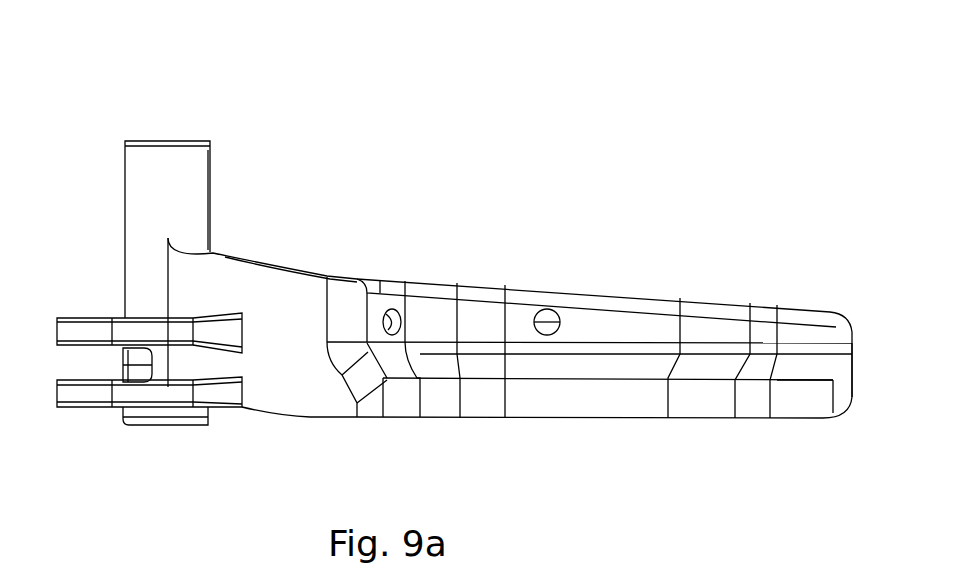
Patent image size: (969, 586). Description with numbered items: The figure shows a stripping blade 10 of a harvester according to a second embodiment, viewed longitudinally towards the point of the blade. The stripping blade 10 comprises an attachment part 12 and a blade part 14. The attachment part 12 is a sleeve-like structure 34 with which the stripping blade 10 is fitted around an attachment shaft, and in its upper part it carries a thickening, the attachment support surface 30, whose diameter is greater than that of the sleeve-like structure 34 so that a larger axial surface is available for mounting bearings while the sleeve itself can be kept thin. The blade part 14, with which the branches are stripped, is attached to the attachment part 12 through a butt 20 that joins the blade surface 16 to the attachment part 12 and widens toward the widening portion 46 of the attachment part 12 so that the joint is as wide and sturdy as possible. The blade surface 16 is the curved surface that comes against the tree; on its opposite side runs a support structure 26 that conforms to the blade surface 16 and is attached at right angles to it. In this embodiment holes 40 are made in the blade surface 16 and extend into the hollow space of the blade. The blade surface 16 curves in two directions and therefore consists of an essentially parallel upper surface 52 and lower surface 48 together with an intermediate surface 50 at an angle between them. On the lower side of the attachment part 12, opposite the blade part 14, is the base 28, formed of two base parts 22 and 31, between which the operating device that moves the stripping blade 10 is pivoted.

The stripping blade 10 is at (607, 55).
The attachment part 12 is at (75, 176).
The blade part 14 is at (418, 185).
The blade surface 16 is at (583, 293).
The butt 20 is at (272, 350).
The base part 22 is at (90, 397).
The support structure 26 is at (282, 267).
The base 28 is at (50, 381).
The attachment support surface 30 is at (172, 140).
The base part 31 is at (92, 318).
The sleeve-like structure 34 is at (205, 177).
The holes 40 is at (547, 310).
The widening portion 46 is at (213, 252).
The lower surface 48 is at (807, 313).
The intermediate surface 50 is at (787, 368).
The upper surface 52 is at (810, 333).